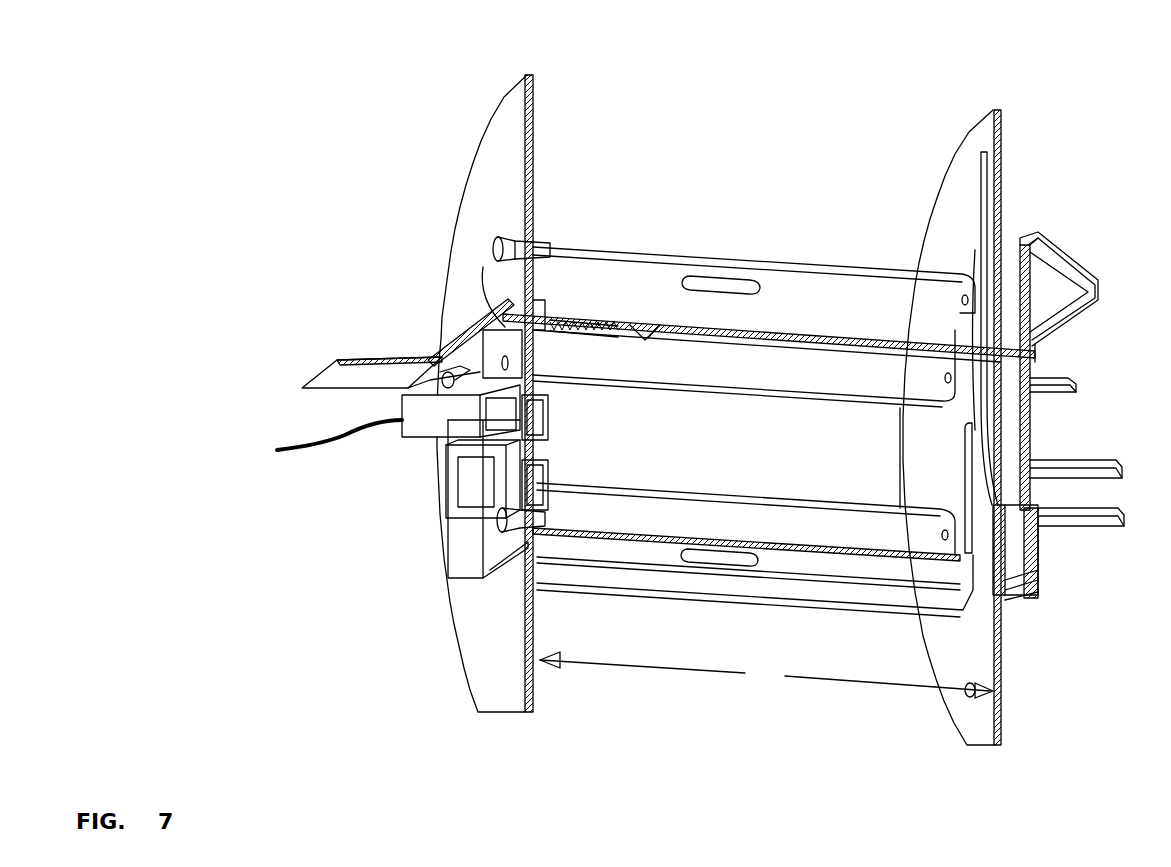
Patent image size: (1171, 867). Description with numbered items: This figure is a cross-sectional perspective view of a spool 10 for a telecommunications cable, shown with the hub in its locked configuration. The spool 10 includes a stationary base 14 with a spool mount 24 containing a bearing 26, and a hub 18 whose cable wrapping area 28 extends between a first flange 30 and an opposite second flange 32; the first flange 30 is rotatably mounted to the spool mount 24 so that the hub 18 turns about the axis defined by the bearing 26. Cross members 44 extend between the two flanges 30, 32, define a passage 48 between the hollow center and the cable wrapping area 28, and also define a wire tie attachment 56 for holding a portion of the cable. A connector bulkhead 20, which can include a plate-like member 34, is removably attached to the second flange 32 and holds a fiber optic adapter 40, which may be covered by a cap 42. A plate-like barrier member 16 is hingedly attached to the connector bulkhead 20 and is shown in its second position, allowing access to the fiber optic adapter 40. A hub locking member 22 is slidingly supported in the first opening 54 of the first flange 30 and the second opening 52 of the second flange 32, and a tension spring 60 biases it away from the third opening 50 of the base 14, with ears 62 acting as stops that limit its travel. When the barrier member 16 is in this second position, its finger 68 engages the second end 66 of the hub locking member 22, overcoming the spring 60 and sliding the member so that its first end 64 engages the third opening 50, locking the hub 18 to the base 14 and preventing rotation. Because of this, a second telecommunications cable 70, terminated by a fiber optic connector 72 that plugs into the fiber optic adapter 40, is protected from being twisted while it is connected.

The spool 10 is at (935, 92).
The base 14 is at (1024, 300).
The barrier member 16 is at (338, 375).
The hub 18 is at (648, 588).
The connector bulkhead 20 is at (490, 560).
The hub locking member 22 is at (830, 340).
The spool mount 24 is at (1010, 515).
The bearing 26 is at (1018, 560).
The cable wrapping area 28 is at (766, 675).
The first flange 30 is at (970, 725).
The second flange 32 is at (505, 700).
The plate-like member 34 is at (490, 537).
The fiber optic adapter 40 is at (545, 405).
The cap 42 is at (450, 487).
The cross members 44 is at (845, 602).
The passage 48 is at (740, 290).
The third opening 50 is at (1040, 357).
The second opening 52 is at (548, 318).
The first opening 54 is at (984, 165).
The wire tie attachment 56 is at (725, 560).
The spring 60 is at (600, 320).
The ears 62 is at (565, 325).
The first end 64 is at (1040, 354).
The second end 66 is at (467, 317).
The finger 68 is at (483, 267).
The second telecommunications cable 70 is at (305, 455).
The fiber optic connector 72 is at (405, 440).